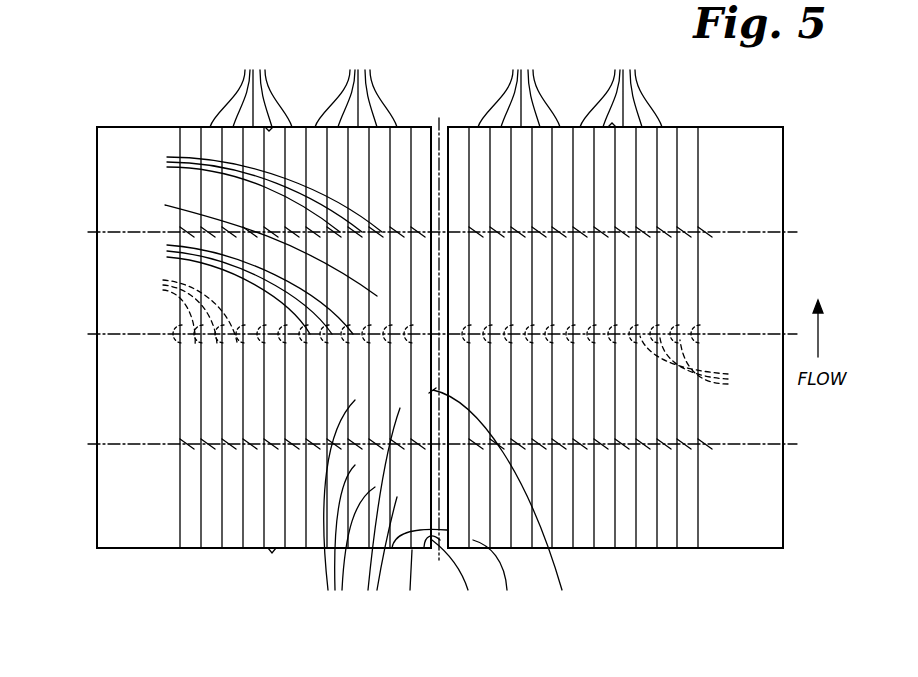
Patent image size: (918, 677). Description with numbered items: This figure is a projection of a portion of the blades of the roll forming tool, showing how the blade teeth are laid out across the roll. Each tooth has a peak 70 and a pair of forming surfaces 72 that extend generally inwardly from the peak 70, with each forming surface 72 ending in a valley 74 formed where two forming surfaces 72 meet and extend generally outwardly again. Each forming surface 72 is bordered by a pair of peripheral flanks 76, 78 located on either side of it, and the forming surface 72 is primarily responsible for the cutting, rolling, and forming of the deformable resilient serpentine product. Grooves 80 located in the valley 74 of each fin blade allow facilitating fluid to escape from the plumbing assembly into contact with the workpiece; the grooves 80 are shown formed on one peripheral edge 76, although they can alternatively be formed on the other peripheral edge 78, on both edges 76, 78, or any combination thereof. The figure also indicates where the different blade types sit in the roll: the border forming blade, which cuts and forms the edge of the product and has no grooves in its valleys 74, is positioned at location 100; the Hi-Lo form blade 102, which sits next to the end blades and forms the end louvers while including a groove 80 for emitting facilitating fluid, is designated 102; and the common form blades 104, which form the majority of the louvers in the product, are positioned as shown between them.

The border forming blade location 100 is at (122, 138).
The Hi-Lo form blade 102 is at (193, 137).
The common form blade 104 is at (436, 87).
The peak 70 is at (260, 191).
The forming surface 72 is at (257, 406).
The valley 74 is at (245, 286).
The peripheral flank 76 is at (482, 503).
The peripheral flank 78 is at (439, 513).
The groove 80 is at (548, 6).